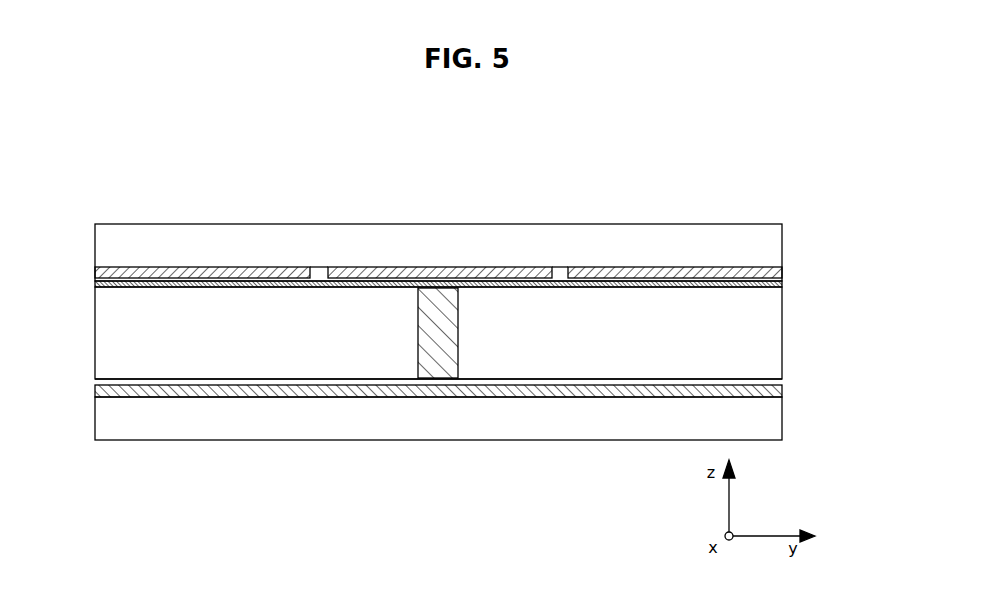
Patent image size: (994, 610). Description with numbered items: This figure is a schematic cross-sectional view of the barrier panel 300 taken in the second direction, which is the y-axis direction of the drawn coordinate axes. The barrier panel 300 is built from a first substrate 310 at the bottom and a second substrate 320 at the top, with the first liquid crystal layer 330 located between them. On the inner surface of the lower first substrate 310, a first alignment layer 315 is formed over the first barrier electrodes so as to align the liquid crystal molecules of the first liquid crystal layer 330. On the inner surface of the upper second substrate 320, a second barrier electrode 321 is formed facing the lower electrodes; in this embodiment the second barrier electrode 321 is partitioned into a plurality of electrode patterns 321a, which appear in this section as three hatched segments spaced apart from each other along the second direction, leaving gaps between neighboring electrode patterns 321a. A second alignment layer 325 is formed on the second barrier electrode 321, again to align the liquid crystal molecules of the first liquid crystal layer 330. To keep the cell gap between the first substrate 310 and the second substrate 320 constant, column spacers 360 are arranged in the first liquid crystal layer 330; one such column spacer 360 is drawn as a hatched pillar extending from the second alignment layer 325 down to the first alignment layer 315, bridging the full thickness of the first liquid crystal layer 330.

The barrier panel 300 is at (458, 543).
The first substrate 310 is at (770, 421).
The first alignment layer 315 is at (770, 380).
The second substrate 320 is at (770, 247).
The second barrier electrode 321 is at (782, 270).
The electrode patterns 321a is at (200, 267).
The second alignment layer 325 is at (775, 284).
The first liquid crystal layer 330 is at (770, 339).
The column spacers 360 is at (428, 336).